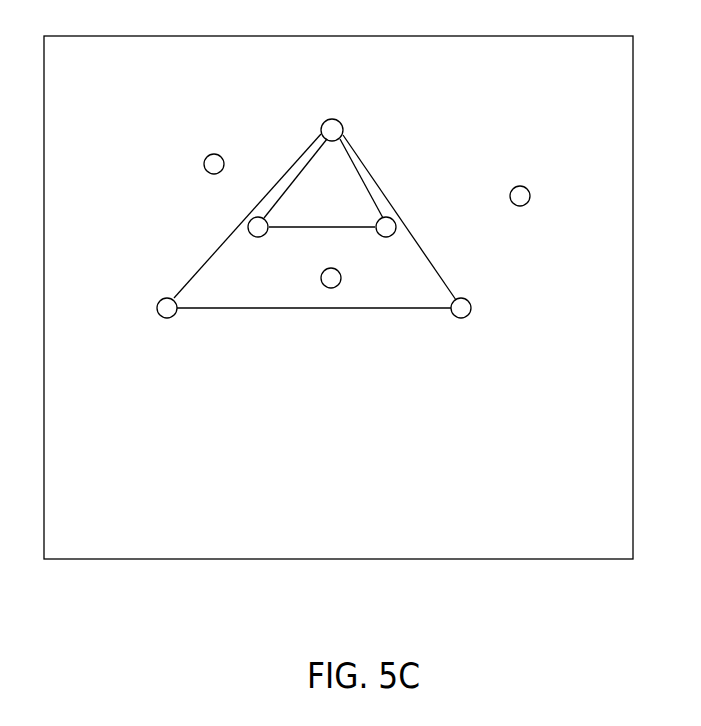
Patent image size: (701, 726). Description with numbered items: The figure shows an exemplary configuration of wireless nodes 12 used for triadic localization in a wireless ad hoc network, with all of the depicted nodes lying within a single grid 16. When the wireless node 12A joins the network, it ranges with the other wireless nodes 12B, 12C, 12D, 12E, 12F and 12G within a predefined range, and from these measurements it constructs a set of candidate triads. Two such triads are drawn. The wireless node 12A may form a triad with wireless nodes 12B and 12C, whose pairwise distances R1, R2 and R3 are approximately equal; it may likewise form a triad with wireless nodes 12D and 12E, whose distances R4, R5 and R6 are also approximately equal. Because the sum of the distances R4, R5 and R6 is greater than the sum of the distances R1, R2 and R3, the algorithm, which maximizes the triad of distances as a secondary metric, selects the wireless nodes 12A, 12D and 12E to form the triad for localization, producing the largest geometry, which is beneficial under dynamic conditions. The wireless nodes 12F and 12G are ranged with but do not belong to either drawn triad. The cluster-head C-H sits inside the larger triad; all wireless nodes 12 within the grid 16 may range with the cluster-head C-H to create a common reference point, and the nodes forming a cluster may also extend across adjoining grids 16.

The wireless node 12 is at (452, 139).
The wireless node 12A is at (343, 122).
The wireless node 12B is at (387, 238).
The wireless node 12C is at (255, 237).
The wireless node 12D is at (465, 318).
The wireless node 12E is at (164, 318).
The wireless node 12F is at (216, 154).
The wireless node 12G is at (520, 206).
The grid 16 is at (595, 553).
The distance R1 is at (356, 198).
The distance R2 is at (309, 195).
The distance R3 is at (321, 243).
The distance R4 is at (418, 201).
The distance R5 is at (215, 213).
The distance R6 is at (317, 346).
The cluster-head C-H is at (336, 287).